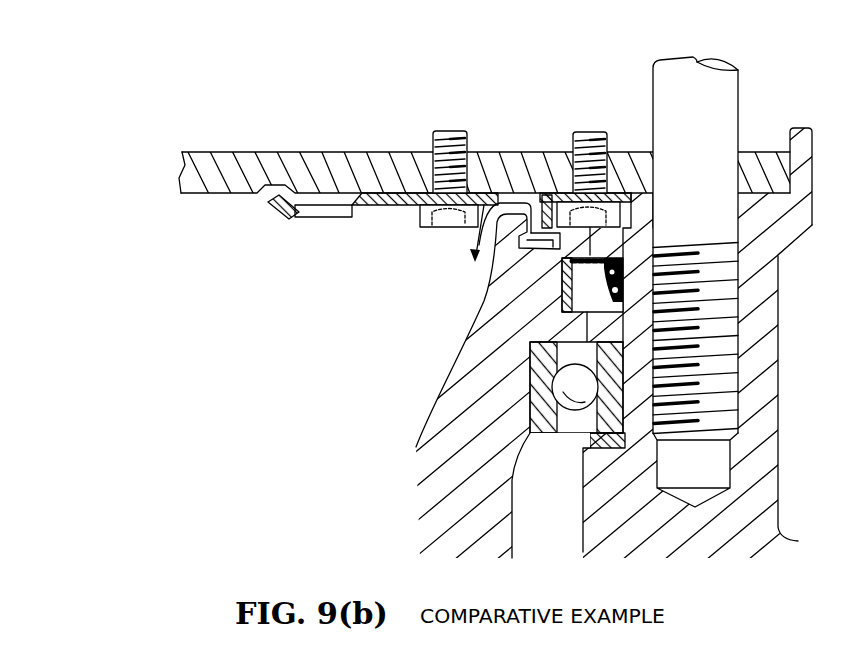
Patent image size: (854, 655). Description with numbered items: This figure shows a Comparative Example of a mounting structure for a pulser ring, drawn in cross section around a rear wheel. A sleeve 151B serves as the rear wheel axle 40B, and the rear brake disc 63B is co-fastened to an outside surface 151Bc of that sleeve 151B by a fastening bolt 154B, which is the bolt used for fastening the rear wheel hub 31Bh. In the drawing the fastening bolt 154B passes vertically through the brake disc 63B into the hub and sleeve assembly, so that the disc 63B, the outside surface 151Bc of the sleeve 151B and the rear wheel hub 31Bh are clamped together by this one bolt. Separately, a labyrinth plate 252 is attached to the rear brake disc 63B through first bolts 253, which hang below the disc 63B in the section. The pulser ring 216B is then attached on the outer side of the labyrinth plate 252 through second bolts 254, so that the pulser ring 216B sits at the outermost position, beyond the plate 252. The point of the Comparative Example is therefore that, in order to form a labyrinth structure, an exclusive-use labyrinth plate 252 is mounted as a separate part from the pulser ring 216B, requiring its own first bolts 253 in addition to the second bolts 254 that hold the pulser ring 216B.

The rear brake disc 63B is at (210, 216).
The pulser ring 216B is at (287, 224).
The second bolts 254 is at (443, 147).
The labyrinth plate 252 is at (552, 207).
The first bolts 253 is at (598, 145).
The rear wheel hub 31Bh is at (633, 132).
The fastening bolt 154B is at (702, 112).
The outside surface 151Bc is at (760, 185).
The rear wheel axle 40B is at (605, 527).
The sleeve 151B is at (795, 383).